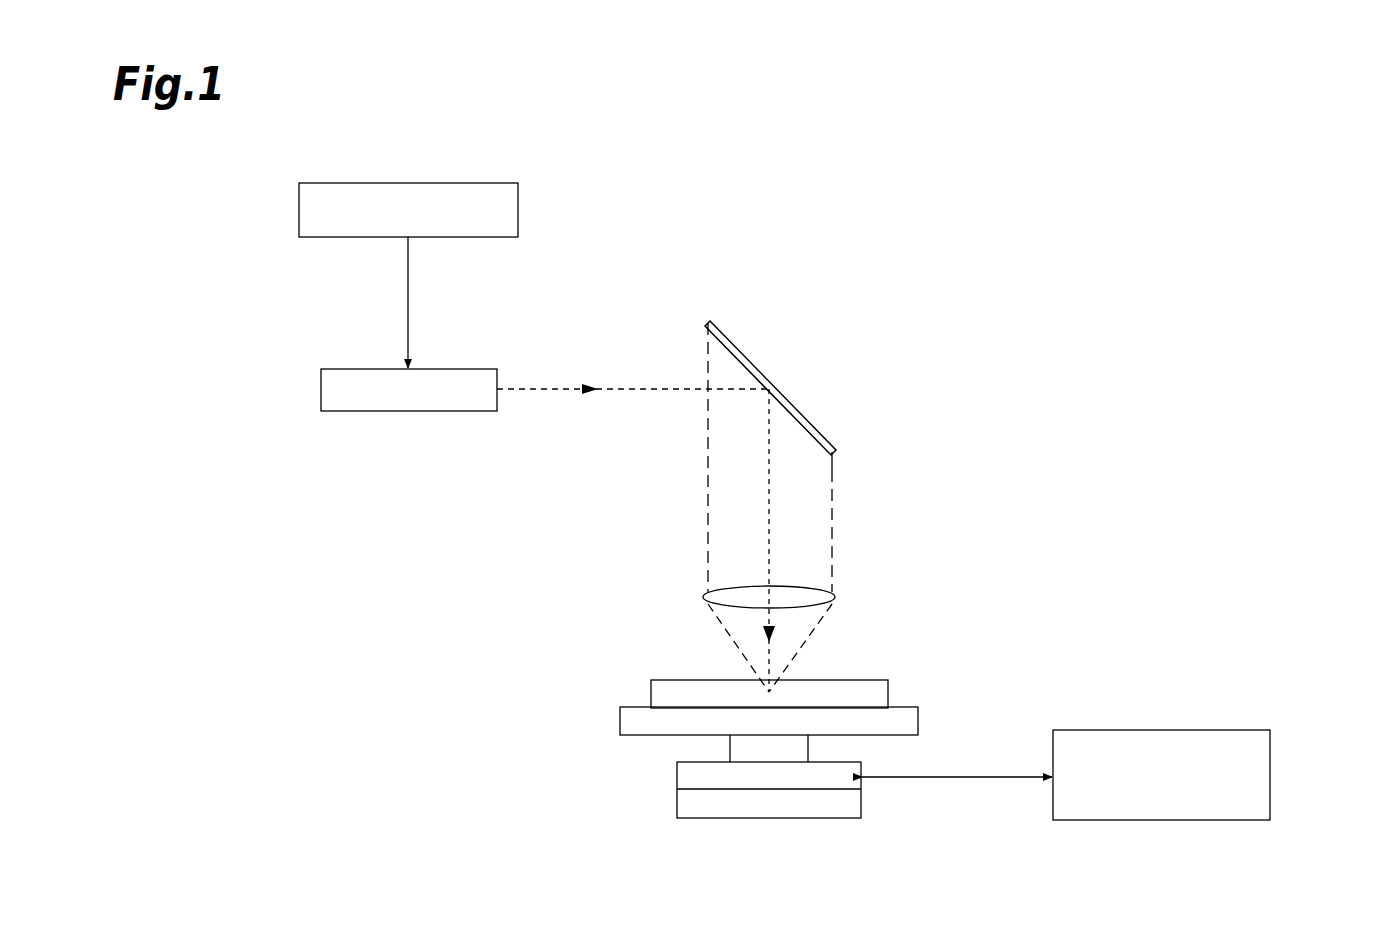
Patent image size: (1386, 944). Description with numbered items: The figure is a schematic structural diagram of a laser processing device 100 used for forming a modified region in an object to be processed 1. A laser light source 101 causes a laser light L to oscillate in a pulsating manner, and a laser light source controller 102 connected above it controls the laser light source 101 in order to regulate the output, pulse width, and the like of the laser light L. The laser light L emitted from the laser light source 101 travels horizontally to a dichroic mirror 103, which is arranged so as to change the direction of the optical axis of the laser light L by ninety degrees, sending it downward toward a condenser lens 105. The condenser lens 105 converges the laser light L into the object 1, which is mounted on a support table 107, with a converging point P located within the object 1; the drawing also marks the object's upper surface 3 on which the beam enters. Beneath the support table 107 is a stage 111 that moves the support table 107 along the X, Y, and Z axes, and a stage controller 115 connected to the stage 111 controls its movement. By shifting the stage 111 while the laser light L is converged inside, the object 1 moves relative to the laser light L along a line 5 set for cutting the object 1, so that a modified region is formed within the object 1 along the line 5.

The laser processing device 100 is at (1196, 244).
The laser light source 101 is at (350, 369).
The laser light source controller 102 is at (350, 183).
The dichroic mirror 103 is at (718, 344).
The condenser lens 105 is at (836, 597).
The support table 107 is at (620, 720).
The stage 111 is at (677, 775).
The stage controller 115 is at (1270, 773).
The object to be processed 1 is at (651, 688).
The surface of workpiece 3 is at (668, 680).
The line to cut the object 5 is at (762, 686).
The laser light L is at (552, 388).
The converging point P is at (775, 692).